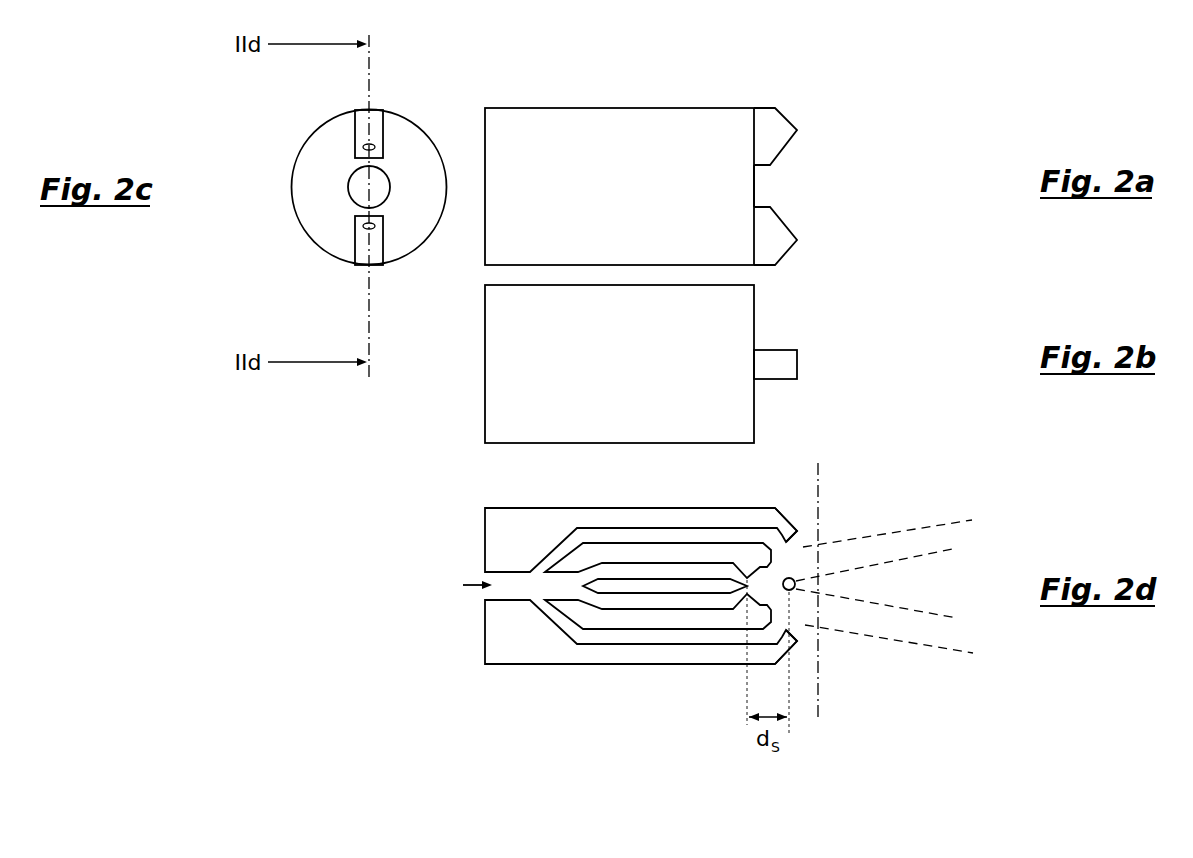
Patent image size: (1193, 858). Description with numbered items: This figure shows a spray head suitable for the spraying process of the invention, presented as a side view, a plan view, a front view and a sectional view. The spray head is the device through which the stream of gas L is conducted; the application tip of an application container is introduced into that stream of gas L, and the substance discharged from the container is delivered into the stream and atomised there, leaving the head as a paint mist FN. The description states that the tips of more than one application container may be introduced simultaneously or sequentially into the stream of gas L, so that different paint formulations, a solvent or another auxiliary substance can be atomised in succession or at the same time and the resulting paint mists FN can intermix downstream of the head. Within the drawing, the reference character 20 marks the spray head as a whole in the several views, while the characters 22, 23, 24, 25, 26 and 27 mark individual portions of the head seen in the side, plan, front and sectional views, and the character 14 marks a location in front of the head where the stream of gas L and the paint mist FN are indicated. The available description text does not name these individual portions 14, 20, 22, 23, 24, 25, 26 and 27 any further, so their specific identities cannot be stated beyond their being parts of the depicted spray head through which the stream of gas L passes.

In FIG. 2D, the focal point 14 is at (828, 553).
In FIG. 2C, the nozzle 20 is at (285, 189).
In FIG. 2A, the nozzle 20 is at (697, 135).
In FIG. 2B, the nozzle 20 is at (630, 364).
In FIG. 2D, the nozzle 20 is at (585, 618).
In FIG. 2A, the nozzle body 22 is at (548, 160).
In FIG. 2D, the nozzle body 22 is at (488, 516).
In FIG. 2D, the gas inlet flow 23 is at (490, 592).
In FIG. 2C, the central opening / bore 24 is at (368, 192).
In FIG. 2A, the central opening / bore 24 is at (757, 183).
In FIG. 2D, the central opening / bore 24 is at (747, 587).
In FIG. 2C, the protruding tooth / tab 25 is at (369, 147).
In FIG. 2A, the protruding tooth / tab 25 is at (796, 128).
In FIG. 2B, the protruding tooth / tab 25 is at (799, 366).
In FIG. 2D, the protruding tooth / tab 25 is at (793, 532).
In FIG. 2D, the inner channel 26 is at (620, 604).
In FIG. 2D, the channel wall 27 is at (692, 528).
In FIG. 2D, the stream of gas L is at (960, 528).
In FIG. 2D, the paint mist FN is at (937, 587).